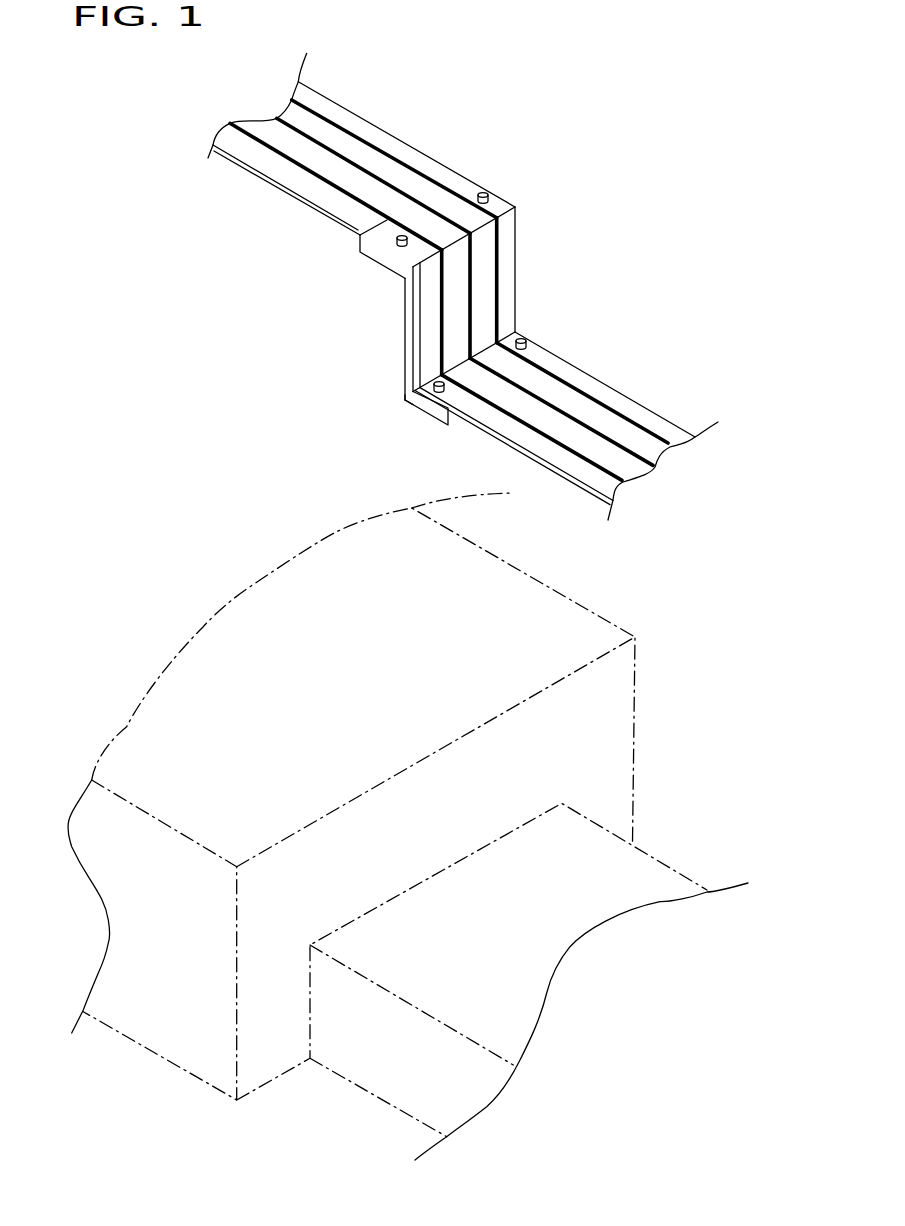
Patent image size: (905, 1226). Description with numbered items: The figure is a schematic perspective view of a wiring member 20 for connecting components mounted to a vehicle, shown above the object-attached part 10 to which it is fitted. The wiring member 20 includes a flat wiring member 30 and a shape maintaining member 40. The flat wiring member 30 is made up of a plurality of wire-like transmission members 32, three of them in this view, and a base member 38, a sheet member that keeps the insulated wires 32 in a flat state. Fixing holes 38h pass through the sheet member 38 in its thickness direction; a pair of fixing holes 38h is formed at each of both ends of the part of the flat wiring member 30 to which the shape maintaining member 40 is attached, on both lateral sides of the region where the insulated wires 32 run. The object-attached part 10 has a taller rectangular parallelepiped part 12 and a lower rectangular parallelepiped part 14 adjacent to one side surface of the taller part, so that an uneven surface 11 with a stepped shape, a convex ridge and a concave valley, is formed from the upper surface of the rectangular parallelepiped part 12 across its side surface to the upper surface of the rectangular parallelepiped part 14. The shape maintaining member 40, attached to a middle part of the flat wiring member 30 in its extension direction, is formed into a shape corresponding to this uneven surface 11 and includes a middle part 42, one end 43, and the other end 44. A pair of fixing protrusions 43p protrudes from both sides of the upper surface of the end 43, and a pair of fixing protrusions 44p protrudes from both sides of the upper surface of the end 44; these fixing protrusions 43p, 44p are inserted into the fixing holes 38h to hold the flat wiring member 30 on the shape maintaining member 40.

The object-attached part 10 is at (650, 692).
The uneven surface 11 is at (528, 778).
The rectangular parallelepiped part 12 is at (602, 615).
The rectangular parallelepiped part 14 is at (672, 862).
The wiring member 20 is at (402, 92).
The flat wiring member 30 is at (427, 152).
The wire-like transmission members 32 is at (560, 442).
The base member 38 is at (608, 383).
The fixing hole 38h is at (494, 206).
The shape maintaining member 40 is at (413, 408).
The middle part 42 is at (404, 330).
The one end 43 is at (360, 245).
The fixing protrusions 43p is at (483, 191).
The other end 44 is at (460, 427).
The fixing protrusions 44p is at (522, 338).